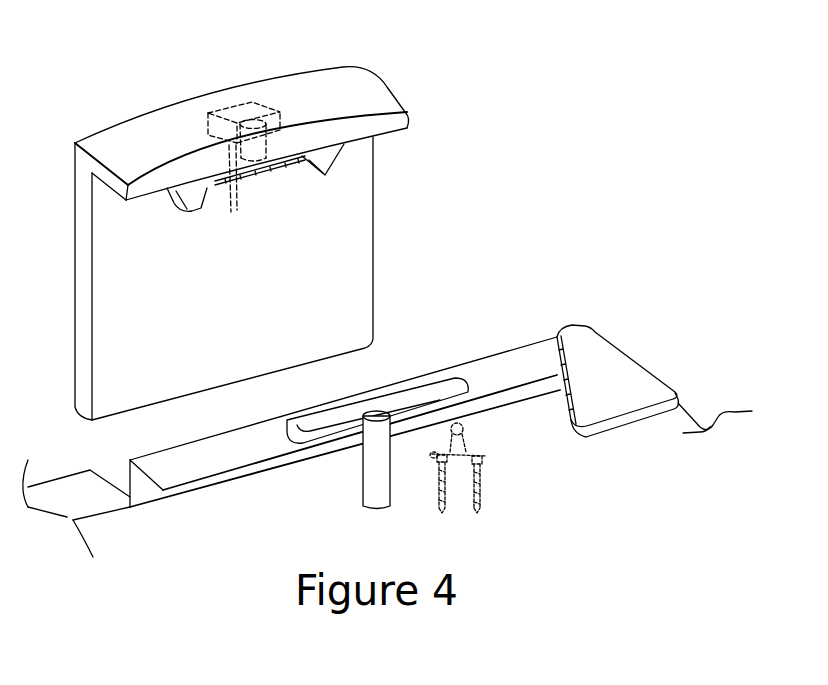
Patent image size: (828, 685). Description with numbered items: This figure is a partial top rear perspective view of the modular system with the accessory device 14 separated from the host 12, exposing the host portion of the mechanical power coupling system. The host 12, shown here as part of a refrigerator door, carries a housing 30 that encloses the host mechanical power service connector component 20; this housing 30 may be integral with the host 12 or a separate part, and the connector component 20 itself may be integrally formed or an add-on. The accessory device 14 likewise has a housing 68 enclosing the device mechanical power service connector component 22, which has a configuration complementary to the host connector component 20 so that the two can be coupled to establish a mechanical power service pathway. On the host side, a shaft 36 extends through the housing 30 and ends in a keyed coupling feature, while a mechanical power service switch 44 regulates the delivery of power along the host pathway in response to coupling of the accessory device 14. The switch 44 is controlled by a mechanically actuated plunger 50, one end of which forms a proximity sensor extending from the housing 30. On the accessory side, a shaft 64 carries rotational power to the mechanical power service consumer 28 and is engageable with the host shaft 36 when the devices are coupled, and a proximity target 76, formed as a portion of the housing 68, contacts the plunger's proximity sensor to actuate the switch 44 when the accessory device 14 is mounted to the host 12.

The host 12 is at (612, 342).
The accessory device 14 is at (185, 100).
The host mechanical power service connector component 20 is at (412, 378).
The device mechanical power service connector component 22 is at (270, 177).
The mechanical power service consumer 28 is at (243, 99).
The housing 30 is at (219, 460).
The shaft 36 is at (391, 475).
The mechanical power service switch 44 is at (490, 478).
The plunger 50 is at (467, 428).
The shaft 64 is at (233, 208).
The housing 68 is at (317, 88).
The proximity target 76 is at (328, 175).